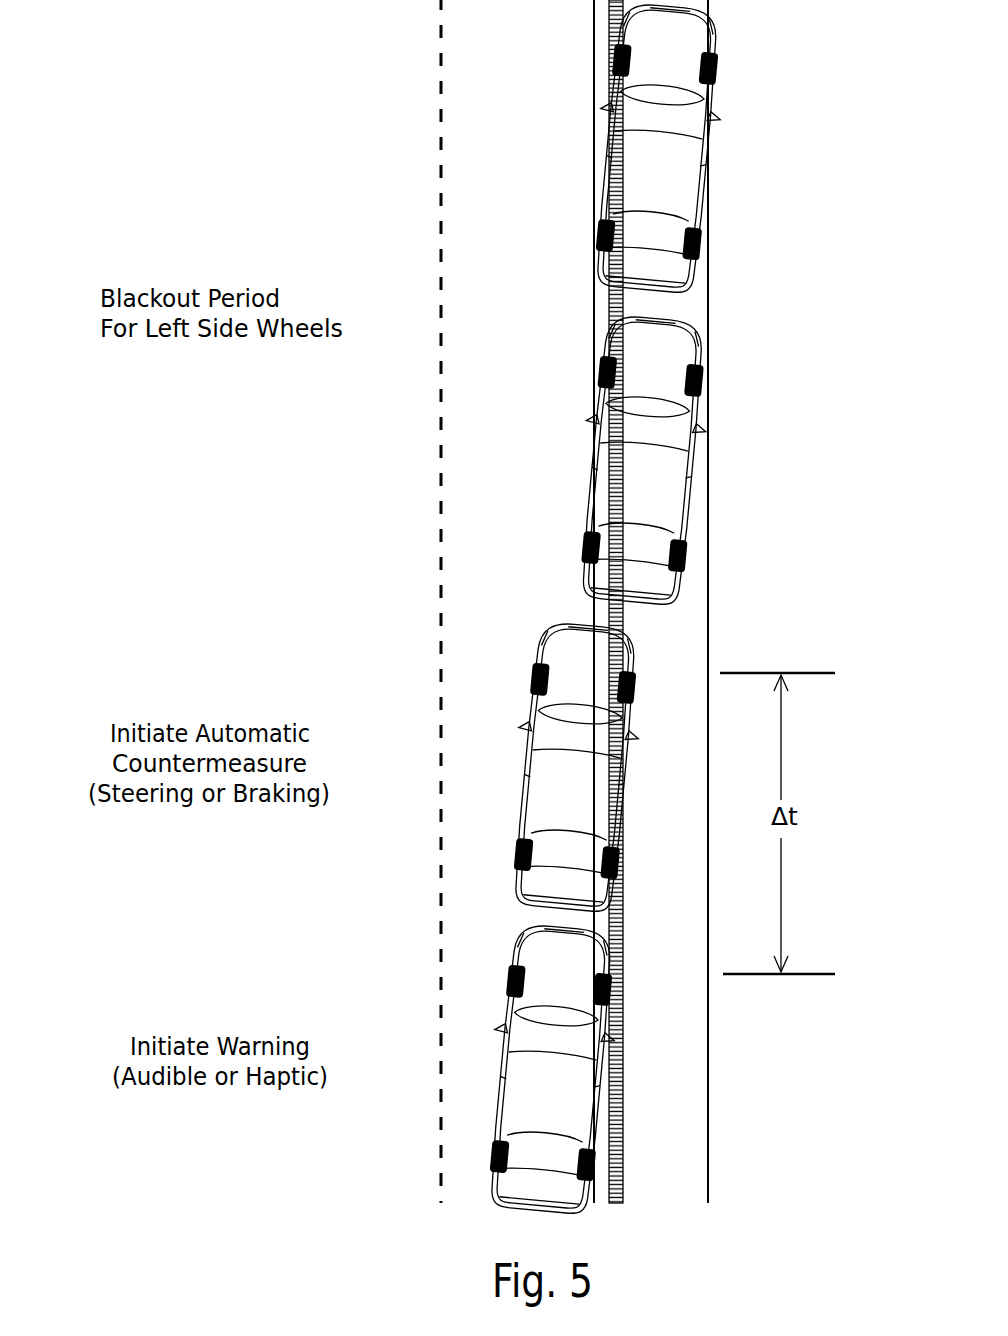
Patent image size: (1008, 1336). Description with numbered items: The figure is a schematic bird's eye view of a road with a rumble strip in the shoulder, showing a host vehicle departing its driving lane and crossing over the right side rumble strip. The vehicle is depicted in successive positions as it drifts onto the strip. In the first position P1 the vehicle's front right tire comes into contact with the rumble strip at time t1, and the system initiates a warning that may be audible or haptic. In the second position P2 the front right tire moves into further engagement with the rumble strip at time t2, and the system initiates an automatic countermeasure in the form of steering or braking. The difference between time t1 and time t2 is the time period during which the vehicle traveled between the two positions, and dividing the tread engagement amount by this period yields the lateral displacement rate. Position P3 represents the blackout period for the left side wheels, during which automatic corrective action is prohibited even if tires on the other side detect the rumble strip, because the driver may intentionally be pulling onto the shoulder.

The first position P1 is at (431, 927).
The second position P2 is at (430, 625).
The third position P3 is at (425, 20).
The first time t1 is at (798, 969).
The second time t2 is at (797, 677).